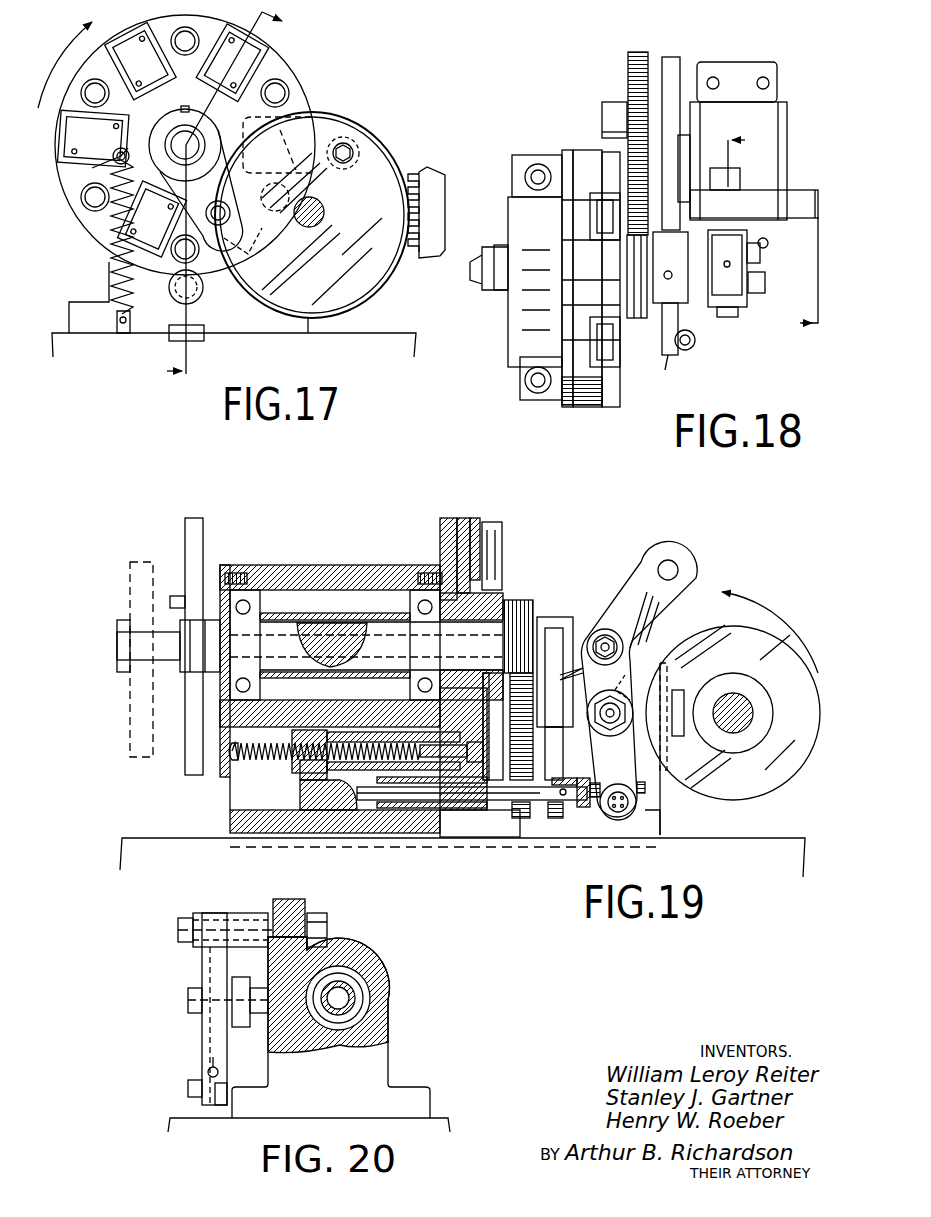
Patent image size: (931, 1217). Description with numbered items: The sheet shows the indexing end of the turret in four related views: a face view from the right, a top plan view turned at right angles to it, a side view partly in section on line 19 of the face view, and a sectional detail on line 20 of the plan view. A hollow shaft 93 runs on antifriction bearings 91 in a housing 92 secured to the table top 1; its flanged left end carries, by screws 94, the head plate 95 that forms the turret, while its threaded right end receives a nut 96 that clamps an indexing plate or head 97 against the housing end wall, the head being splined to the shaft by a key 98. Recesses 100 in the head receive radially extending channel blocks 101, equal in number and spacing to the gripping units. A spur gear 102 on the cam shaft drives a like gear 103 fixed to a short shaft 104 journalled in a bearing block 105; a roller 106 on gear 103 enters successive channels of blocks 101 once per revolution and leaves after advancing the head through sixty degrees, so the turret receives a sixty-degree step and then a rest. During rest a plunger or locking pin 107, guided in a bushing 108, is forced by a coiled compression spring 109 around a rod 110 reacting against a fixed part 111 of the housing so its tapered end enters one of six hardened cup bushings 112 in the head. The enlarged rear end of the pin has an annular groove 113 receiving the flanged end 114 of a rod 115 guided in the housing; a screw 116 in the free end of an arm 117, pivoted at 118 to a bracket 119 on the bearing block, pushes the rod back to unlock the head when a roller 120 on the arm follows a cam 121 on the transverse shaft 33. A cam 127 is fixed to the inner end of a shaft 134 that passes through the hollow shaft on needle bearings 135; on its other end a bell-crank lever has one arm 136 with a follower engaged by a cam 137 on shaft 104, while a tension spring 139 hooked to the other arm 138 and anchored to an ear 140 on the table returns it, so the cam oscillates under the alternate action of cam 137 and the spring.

In FIG. 17, the table top 1 is at (400, 336).
In FIG. 19, the table top 1 is at (785, 840).
In FIG. 20, the table top 1 is at (205, 1120).
In FIG. 17, the section line 19— 19 is at (223, 196).
In FIG. 18, the section line 20— 20 is at (773, 232).
In FIG. 19, the transverse shaft 33 is at (750, 713).
In FIG. 19, the antifriction bearings 91 is at (250, 590).
In FIG. 17, the housing 92 is at (282, 326).
In FIG. 18, the housing 92 is at (510, 225).
In FIG. 19, the housing 92 is at (385, 548).
In FIG. 18, the hollow shaft 93 is at (500, 295).
In FIG. 19, the hollow shaft 93 is at (330, 640).
In FIG. 19, the screws 94 is at (170, 602).
In FIG. 19, the head plate 95 is at (203, 530).
In FIG. 17, the nut 96 is at (205, 122).
In FIG. 18, the nut 96 is at (638, 318).
In FIG. 19, the nut 96 is at (525, 600).
In FIG. 17, the indexing plate or head 97 is at (292, 97).
In FIG. 18, the indexing plate or head 97 is at (595, 405).
In FIG. 19, the indexing plate or head 97 is at (462, 518).
In FIG. 19, the key 98 is at (487, 620).
In FIG. 17, the recesses 100 is at (277, 145).
In FIG. 19, the recesses 100 is at (480, 520).
In FIG. 17, the channel blocks 101 is at (318, 115).
In FIG. 18, the channel blocks 101 is at (620, 385).
In FIG. 19, the channel blocks 101 is at (502, 545).
In FIG. 17, the spur gear 102 is at (437, 172).
In FIG. 17, the gear 103 is at (415, 256).
In FIG. 18, the gear 103 is at (628, 78).
In FIG. 19, the gear 103 is at (522, 818).
In FIG. 17, the short shaft 104 is at (314, 226).
In FIG. 18, the short shaft 104 is at (686, 148).
In FIG. 20, the short shaft 104 is at (352, 998).
In FIG. 18, the bearing block 105 is at (765, 115).
In FIG. 19, the bearing block 105 is at (665, 805).
In FIG. 20, the bearing block 105 is at (372, 965).
In FIG. 17, the roller 106 is at (352, 143).
In FIG. 18, the roller 106 is at (602, 115).
In FIG. 19, the plunger or locking pin 107 is at (420, 783).
In FIG. 19, the bushing 108 is at (340, 740).
In FIG. 19, the coiled compression spring 109 is at (280, 760).
In FIG. 19, the rod 110 is at (235, 760).
In FIG. 19, the fixed part of the housing 111 is at (230, 790).
In FIG. 17, the cup bushings 112 is at (95, 211).
In FIG. 19, the cup bushings 112 is at (488, 805).
In FIG. 19, the annular groove 113 is at (305, 740).
In FIG. 19, the flanged end 114 is at (300, 833).
In FIG. 17, the rod 115 is at (196, 300).
In FIG. 19, the rod 115 is at (345, 783).
In FIG. 18, the screw 116 is at (765, 283).
In FIG. 19, the screw 116 is at (600, 805).
In FIG. 20, the screw 116 is at (208, 1072).
In FIG. 18, the arm 117 is at (745, 295).
In FIG. 19, the arm 117 is at (630, 815).
In FIG. 20, the arm 117 is at (202, 1035).
In FIG. 19, the pivot 118 is at (609, 640).
In FIG. 20, the pivot 118 is at (225, 913).
In FIG. 18, the bracket 119 is at (800, 192).
In FIG. 19, the bracket 119 is at (696, 578).
In FIG. 20, the bracket 119 is at (305, 905).
In FIG. 18, the roller 120 is at (760, 257).
In FIG. 19, the roller 120 is at (618, 736).
In FIG. 20, the roller 120 is at (245, 1027).
In FIG. 19, the cam 121 is at (770, 810).
In FIG. 19, the cam 127 is at (130, 580).
In FIG. 17, the shaft 134 is at (172, 98).
In FIG. 18, the shaft 134 is at (476, 282).
In FIG. 19, the shaft 134 is at (315, 640).
In FIG. 19, the needle bearings 135 is at (185, 660).
In FIG. 17, the bell-crank arm 136 is at (236, 232).
In FIG. 18, the bell-crank arm 136 is at (688, 290).
In FIG. 19, the bell-crank arm 136 is at (600, 620).
In FIG. 17, the cam 137 is at (360, 285).
In FIG. 18, the cam 137 is at (678, 58).
In FIG. 19, the cam 137 is at (553, 818).
In FIG. 17, the bell-crank arm 138 is at (113, 151).
In FIG. 18, the bell-crank arm 138 is at (681, 375).
In FIG. 19, the bell-crank arm 138 is at (572, 668).
In FIG. 17, the tension spring 139 is at (103, 285).
In FIG. 18, the tension spring 139 is at (692, 347).
In FIG. 19, the tension spring 139 is at (612, 686).
In FIG. 17, the ear 140 is at (122, 327).